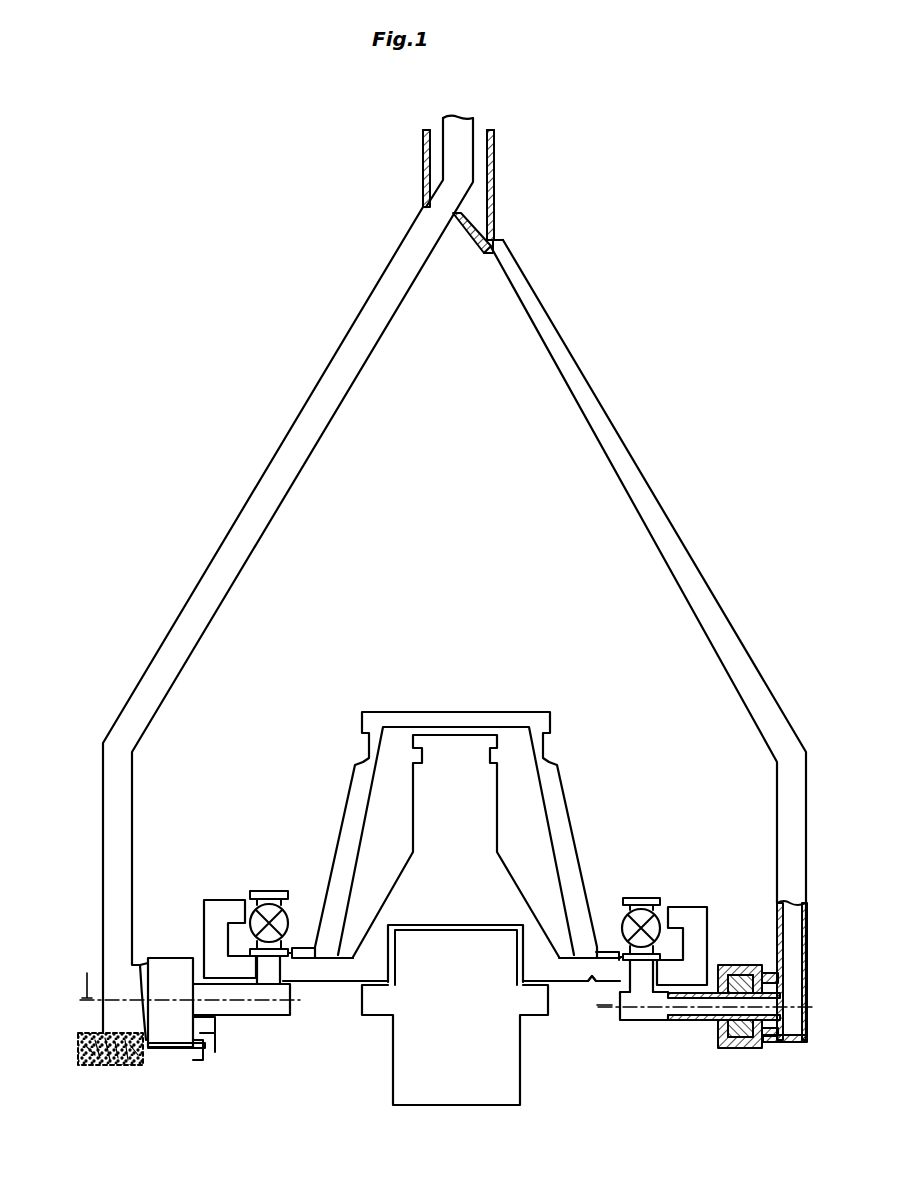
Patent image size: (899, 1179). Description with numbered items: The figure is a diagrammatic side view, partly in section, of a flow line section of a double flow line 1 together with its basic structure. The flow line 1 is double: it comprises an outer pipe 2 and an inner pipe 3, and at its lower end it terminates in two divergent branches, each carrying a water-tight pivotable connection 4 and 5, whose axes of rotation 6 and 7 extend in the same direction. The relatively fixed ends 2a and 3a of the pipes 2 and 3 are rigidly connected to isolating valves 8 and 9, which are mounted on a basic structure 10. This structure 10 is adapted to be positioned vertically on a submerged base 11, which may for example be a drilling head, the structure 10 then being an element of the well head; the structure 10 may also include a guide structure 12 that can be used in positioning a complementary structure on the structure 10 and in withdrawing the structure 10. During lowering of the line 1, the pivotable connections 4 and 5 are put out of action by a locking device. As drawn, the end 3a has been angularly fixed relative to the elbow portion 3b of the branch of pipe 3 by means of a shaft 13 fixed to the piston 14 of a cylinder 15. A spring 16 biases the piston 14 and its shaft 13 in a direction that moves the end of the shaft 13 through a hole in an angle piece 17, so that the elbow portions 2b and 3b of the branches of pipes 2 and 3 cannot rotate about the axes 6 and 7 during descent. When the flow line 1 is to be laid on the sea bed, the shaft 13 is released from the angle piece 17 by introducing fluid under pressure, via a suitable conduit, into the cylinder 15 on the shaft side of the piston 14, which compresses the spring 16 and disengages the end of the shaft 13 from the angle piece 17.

The flow line 1 is at (421, 172).
The outer pipe 2 is at (495, 172).
The relatively fixed end of outer pipe 2a is at (648, 1022).
The elbow portion of outer pipe branch 2b is at (782, 1042).
The inner pipe 3 is at (385, 300).
The relatively fixed end of inner pipe 3a is at (289, 1016).
The elbow portion of inner pipe branch 3b is at (138, 965).
The water-tight pivotable connection 4 is at (737, 962).
The water-tight pivotable connection 5 is at (174, 955).
The axis of rotation 6 is at (604, 1000).
The axis of rotation 7 is at (346, 986).
The isolating valve 8 is at (640, 918).
The isolating valve 9 is at (268, 910).
The basic structure 10 is at (475, 812).
The submerged base 11 is at (405, 1063).
The guide structure 12 is at (347, 795).
The shaft 13 is at (178, 1052).
The piston 14 is at (120, 1060).
The cylinder 15 is at (78, 1047).
The spring 16 is at (107, 1058).
The angle piece 17 is at (204, 1033).